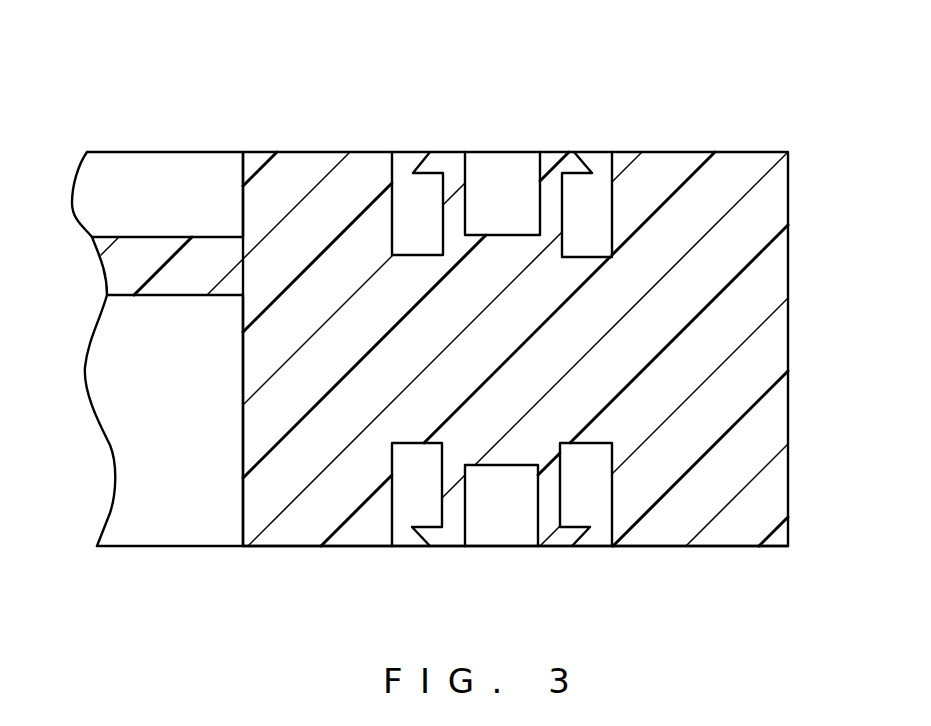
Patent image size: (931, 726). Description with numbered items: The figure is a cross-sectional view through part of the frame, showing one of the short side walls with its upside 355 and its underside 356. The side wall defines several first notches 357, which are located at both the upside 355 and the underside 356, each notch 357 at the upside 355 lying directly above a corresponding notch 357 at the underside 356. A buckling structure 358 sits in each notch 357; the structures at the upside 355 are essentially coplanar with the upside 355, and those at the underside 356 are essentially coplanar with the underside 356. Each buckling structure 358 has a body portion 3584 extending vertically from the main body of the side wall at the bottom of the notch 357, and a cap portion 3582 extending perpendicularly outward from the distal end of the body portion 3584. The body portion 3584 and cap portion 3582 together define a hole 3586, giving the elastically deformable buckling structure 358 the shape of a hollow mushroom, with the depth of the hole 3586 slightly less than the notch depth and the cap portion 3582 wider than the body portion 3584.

The upside 355 is at (312, 142).
The underside 356 is at (662, 556).
The first notch 357 is at (404, 233).
The buckling structure 358 is at (677, 36).
The cap portion 3582 is at (572, 168).
The body portion 3584 is at (548, 213).
The hole 3586 is at (503, 180).